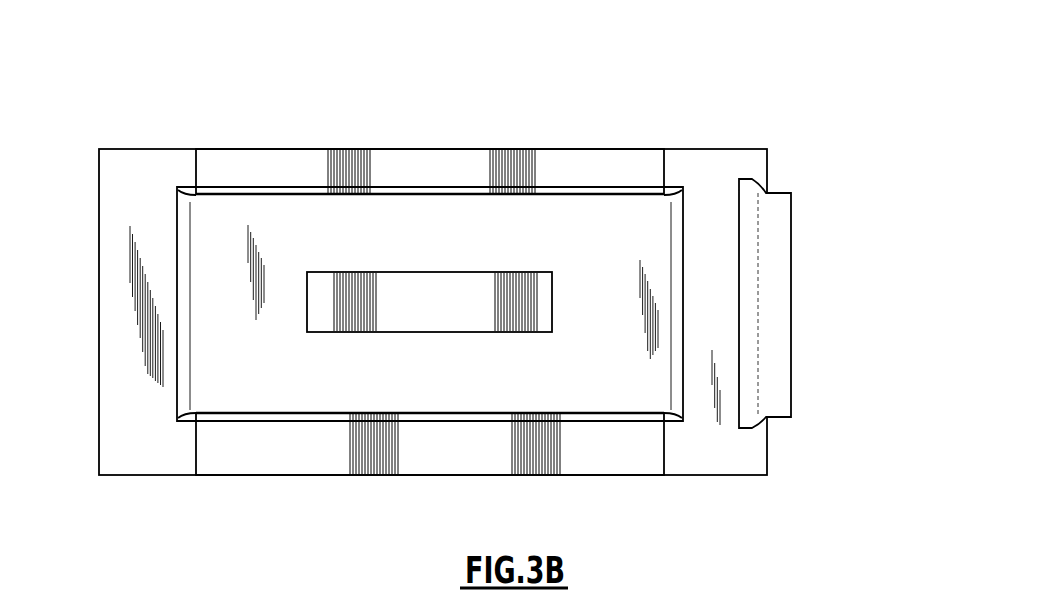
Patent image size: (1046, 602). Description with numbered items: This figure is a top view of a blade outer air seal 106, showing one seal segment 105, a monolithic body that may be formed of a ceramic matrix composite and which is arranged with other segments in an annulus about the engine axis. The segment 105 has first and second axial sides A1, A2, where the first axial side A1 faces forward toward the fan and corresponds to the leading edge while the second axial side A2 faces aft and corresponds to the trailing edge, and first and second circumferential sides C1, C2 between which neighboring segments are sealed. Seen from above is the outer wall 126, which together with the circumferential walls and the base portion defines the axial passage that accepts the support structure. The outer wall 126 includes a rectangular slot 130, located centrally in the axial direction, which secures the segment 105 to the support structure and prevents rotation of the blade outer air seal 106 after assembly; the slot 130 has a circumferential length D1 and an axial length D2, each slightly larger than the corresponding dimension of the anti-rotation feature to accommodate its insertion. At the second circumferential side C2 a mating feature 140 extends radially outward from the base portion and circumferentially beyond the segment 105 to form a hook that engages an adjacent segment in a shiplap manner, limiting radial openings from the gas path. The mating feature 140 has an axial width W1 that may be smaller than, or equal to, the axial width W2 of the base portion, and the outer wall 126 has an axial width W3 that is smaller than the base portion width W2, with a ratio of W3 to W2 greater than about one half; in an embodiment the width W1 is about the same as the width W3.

The blade outer air seal 106 is at (167, 98).
The seal segment 105 is at (262, 165).
The outer wall 126 is at (475, 215).
The slot 130 is at (327, 315).
The mating feature 140 is at (776, 208).
The first circumferential side C1 is at (99, 290).
The second circumferential side C2 is at (791, 380).
The first axial side A1 is at (593, 476).
The second axial side A2 is at (571, 149).
The length of the slot in the circumferential direction D1 is at (553, 266).
The length of the slot in the axial direction D2 is at (561, 268).
The width of the mating feature W1 is at (838, 428).
The width of the base portion W2 is at (900, 490).
The width of the outer wall W3 is at (687, 427).